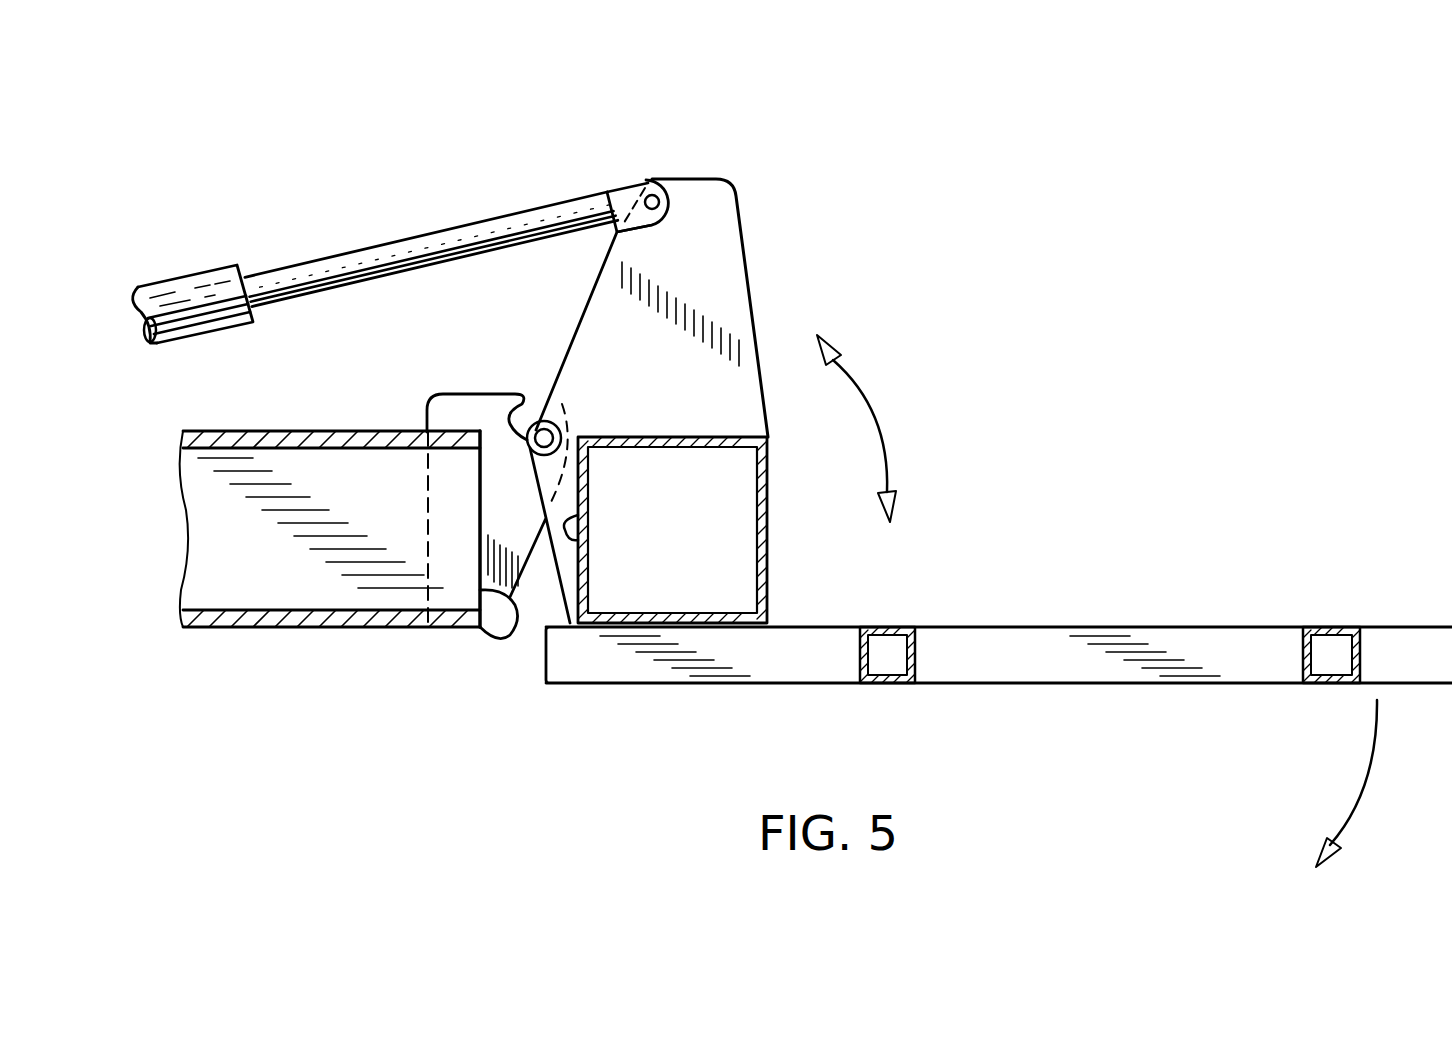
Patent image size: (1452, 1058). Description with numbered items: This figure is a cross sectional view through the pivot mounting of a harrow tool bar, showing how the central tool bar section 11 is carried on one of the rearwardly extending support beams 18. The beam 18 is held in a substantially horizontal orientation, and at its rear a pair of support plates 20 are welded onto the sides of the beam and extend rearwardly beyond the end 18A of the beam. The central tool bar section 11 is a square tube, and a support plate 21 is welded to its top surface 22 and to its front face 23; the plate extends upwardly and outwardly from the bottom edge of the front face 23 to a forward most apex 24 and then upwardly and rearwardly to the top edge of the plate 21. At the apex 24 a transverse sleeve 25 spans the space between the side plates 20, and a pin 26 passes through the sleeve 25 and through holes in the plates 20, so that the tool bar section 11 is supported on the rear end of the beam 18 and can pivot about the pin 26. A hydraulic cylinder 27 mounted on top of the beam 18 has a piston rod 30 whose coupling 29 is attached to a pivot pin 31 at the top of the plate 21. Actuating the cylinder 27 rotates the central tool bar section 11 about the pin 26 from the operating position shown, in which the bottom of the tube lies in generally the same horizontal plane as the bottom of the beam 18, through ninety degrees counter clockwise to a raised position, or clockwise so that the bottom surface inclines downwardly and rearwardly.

The central tool bar section 11 is at (770, 524).
The support beam 18 is at (317, 628).
The end of the beam 18A is at (513, 623).
The support plates 20 is at (438, 410).
The support plate 21 is at (718, 272).
The top surface 22 is at (652, 436).
The front face 23 is at (580, 532).
The apex 24 is at (521, 398).
The transverse sleeve 25 is at (550, 410).
The pin 26 is at (540, 486).
The hydraulic cylinder 27 is at (197, 278).
The coupling 29 is at (618, 192).
The piston rod 30 is at (413, 243).
The pivot pin 31 is at (652, 190).